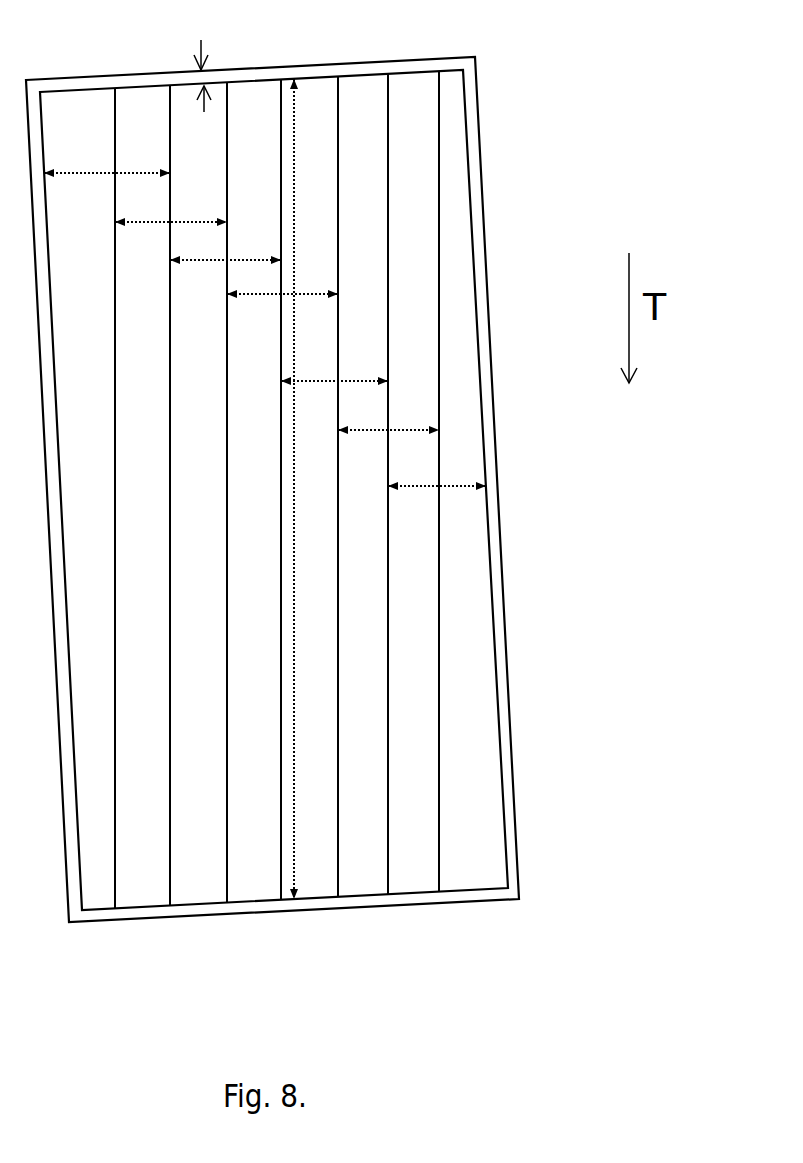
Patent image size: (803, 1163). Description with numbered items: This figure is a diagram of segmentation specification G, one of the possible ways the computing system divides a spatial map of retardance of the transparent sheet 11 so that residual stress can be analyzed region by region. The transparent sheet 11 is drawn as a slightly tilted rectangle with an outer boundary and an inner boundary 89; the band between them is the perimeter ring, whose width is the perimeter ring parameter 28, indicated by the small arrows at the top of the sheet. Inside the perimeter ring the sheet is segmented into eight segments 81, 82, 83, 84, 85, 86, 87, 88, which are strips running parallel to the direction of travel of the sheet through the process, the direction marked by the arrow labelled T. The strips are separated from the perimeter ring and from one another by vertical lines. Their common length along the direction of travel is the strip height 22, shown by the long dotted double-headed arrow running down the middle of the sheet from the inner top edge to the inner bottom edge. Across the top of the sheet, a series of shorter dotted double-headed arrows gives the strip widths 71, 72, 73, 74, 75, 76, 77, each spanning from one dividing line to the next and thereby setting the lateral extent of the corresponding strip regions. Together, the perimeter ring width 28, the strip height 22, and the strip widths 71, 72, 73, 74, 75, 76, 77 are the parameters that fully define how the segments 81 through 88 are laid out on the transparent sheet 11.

The transparent sheet 11 is at (510, 450).
The inner frame edge of panel 89 is at (297, 73).
The perimeter ring 28 is at (190, 57).
The strip height 22 is at (312, 489).
The strip width 71 is at (107, 159).
The strip width 72 is at (171, 209).
The strip width 73 is at (225, 243).
The strip width 74 is at (282, 282).
The strip width 75 is at (334, 364).
The strip width 76 is at (388, 416).
The strip width 77 is at (437, 473).
The segment 81 is at (77, 499).
The segment 82 is at (142, 496).
The segment 83 is at (198, 493).
The segment 84 is at (254, 490).
The segment 85 is at (309, 487).
The segment 86 is at (363, 485).
The segment 87 is at (413, 482).
The segment 88 is at (473, 480).